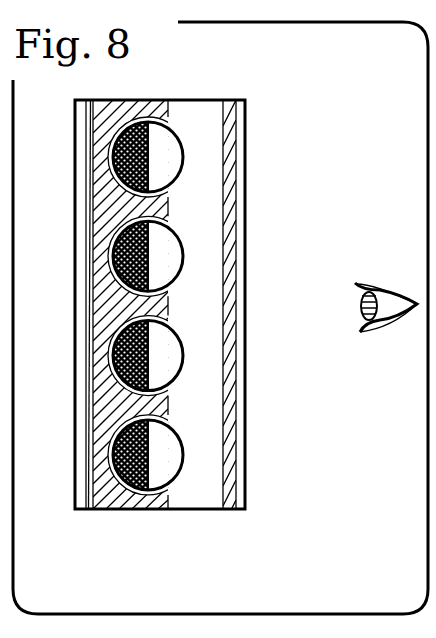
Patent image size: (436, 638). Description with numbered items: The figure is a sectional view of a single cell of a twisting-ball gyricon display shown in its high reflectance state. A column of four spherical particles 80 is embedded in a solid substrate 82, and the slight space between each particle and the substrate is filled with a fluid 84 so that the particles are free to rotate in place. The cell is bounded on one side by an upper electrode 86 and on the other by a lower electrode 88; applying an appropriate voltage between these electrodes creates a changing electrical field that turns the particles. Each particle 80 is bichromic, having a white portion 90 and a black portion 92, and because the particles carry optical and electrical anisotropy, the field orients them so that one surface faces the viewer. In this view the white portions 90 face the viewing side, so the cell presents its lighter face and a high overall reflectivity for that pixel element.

The spherical particles 80 is at (128, 274).
The solid substrate 82 is at (137, 509).
The fluid 84 is at (203, 502).
The upper electrode 86 is at (232, 470).
The lower electrode 88 is at (88, 509).
The white portion 90 is at (166, 156).
The black portion 92 is at (120, 160).